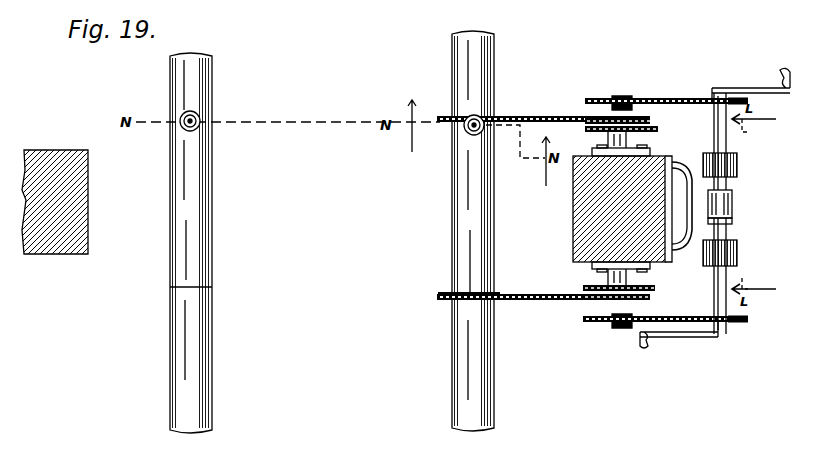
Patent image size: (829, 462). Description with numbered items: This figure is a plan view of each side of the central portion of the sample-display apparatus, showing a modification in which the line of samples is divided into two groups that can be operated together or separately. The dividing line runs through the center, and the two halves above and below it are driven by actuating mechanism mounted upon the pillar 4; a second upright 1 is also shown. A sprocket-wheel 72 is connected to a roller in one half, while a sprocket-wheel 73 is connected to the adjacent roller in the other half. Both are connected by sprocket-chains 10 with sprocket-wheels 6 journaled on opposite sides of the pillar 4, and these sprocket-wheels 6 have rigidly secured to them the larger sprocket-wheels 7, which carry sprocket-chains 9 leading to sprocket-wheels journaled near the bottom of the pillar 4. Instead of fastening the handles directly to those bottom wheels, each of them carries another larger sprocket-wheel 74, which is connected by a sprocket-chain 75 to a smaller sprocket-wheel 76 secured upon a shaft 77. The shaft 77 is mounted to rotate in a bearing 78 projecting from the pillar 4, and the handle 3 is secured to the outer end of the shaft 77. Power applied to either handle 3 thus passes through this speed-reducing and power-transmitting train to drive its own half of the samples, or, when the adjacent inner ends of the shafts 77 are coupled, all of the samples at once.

The pole 1 is at (213, 238).
The handle 3 is at (782, 76).
The pillar 4 is at (573, 202).
The sprocket-wheel 6 is at (652, 121).
The larger sprocket-wheel 7 is at (660, 131).
The sprocket-chain 9 is at (600, 134).
The sprocket-chain 10 is at (540, 116).
The sprocket-wheel 72 is at (452, 116).
The sprocket-wheel 73 is at (442, 294).
The larger sprocket-wheel 74 is at (622, 96).
The sprocket-chain 75 is at (692, 80).
The smaller sprocket-wheel 76 is at (750, 103).
The shaft 77 is at (728, 150).
The bearing 78 is at (690, 190).